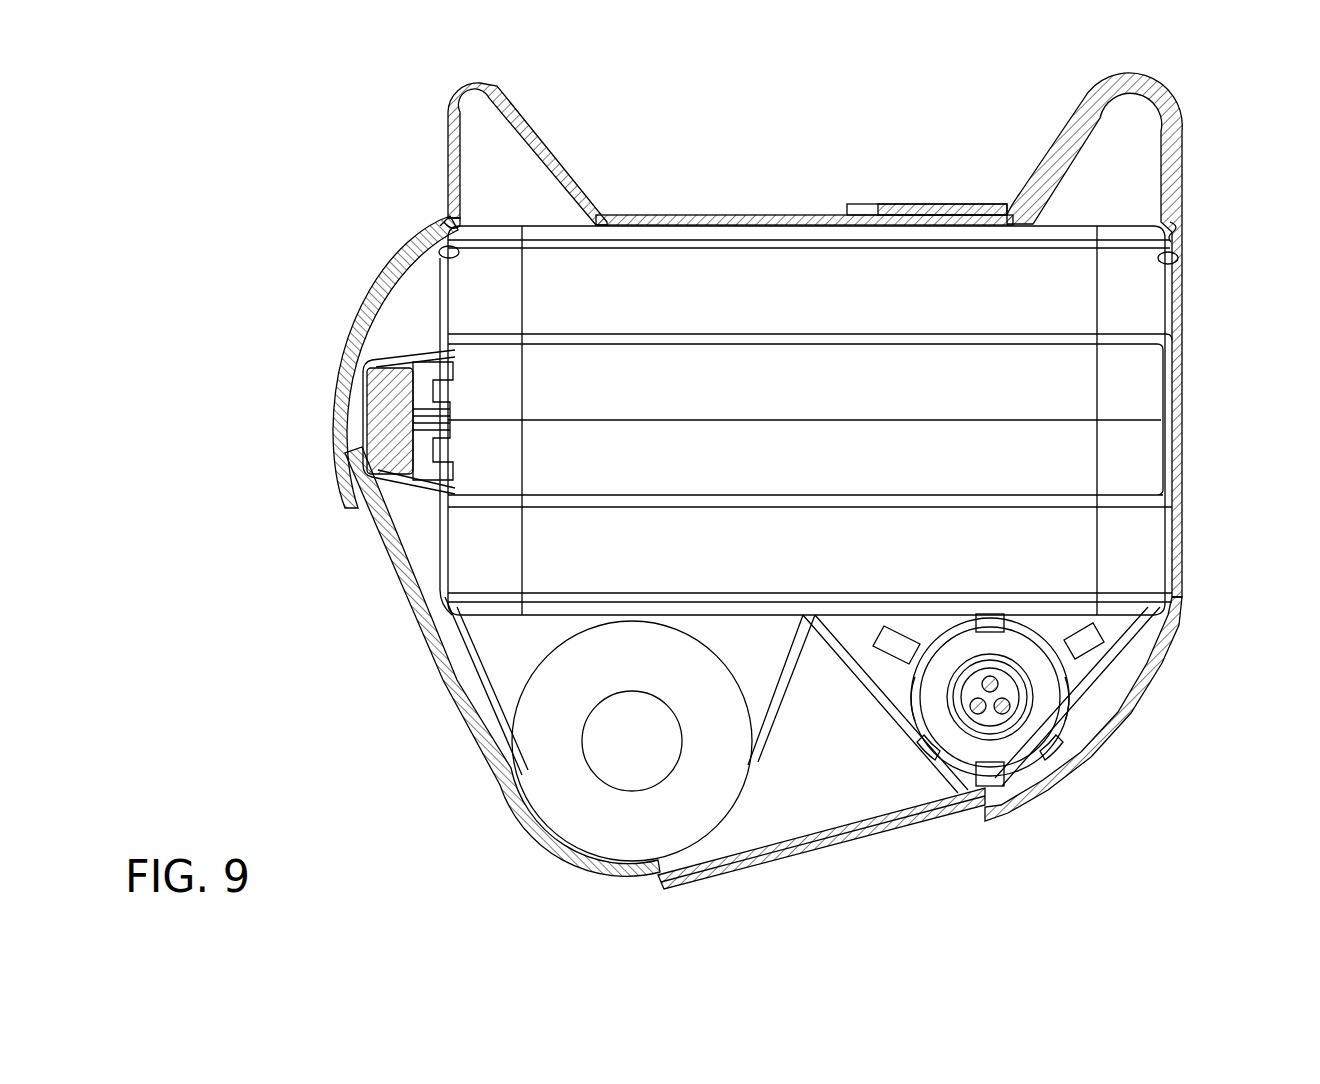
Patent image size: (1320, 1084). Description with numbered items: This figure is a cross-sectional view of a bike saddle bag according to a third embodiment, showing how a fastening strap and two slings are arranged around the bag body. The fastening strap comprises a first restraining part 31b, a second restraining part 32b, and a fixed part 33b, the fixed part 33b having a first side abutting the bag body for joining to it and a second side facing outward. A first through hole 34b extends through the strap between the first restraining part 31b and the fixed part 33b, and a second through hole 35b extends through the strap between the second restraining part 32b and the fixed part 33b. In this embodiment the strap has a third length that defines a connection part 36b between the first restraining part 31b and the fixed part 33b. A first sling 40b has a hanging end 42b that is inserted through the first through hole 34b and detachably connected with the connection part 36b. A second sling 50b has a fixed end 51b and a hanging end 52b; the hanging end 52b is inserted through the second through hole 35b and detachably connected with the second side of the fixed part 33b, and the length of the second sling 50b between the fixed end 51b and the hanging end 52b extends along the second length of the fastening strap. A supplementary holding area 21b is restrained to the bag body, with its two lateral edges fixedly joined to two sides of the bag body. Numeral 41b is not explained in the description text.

The second sling 50b is at (1142, 78).
The hanging end 52b is at (912, 204).
The fixed part 33b is at (778, 215).
The first through hole 34b is at (445, 220).
The engaging protrusion 41b is at (440, 256).
The first sling 40b is at (368, 300).
The second through hole 35b is at (1172, 226).
The fixed end 51b is at (1178, 262).
The connection part 36b is at (338, 398).
The hanging end 42b is at (345, 478).
The supplementary holding area 21b is at (838, 800).
The first restraining part 31b is at (970, 812).
The second restraining part 32b is at (678, 888).